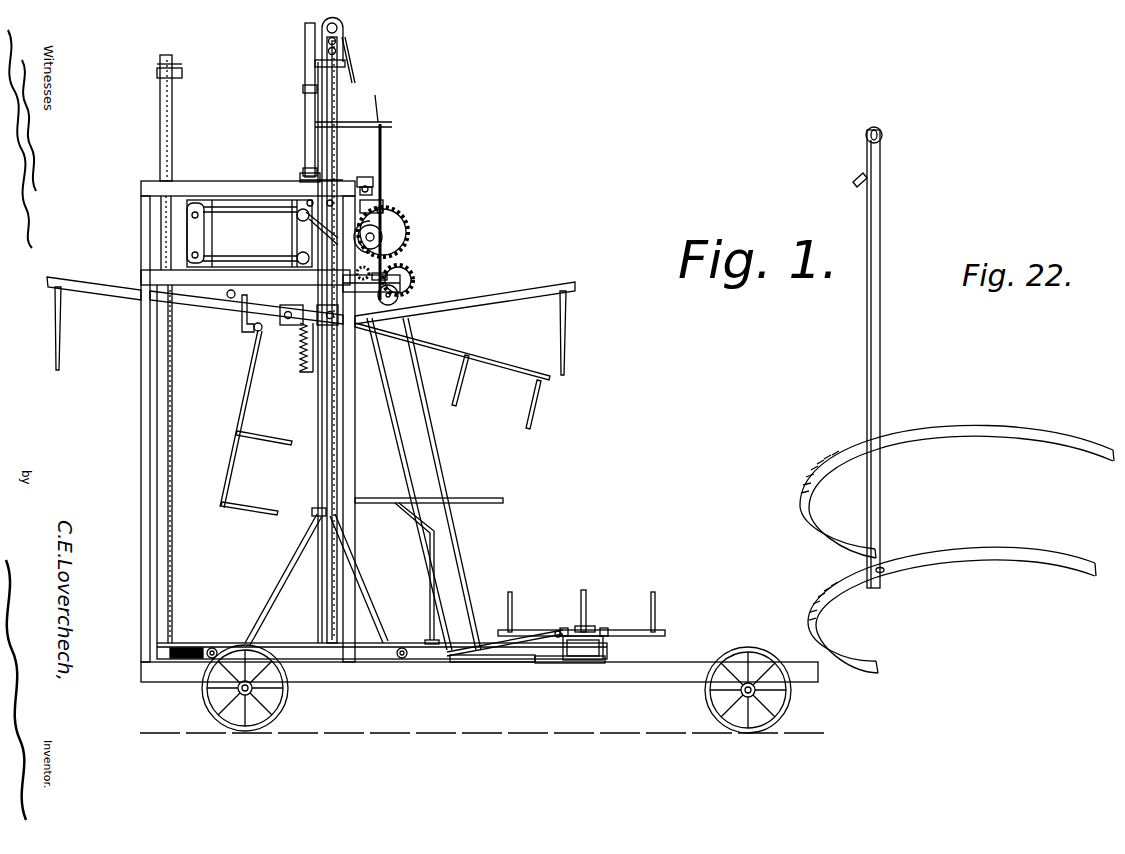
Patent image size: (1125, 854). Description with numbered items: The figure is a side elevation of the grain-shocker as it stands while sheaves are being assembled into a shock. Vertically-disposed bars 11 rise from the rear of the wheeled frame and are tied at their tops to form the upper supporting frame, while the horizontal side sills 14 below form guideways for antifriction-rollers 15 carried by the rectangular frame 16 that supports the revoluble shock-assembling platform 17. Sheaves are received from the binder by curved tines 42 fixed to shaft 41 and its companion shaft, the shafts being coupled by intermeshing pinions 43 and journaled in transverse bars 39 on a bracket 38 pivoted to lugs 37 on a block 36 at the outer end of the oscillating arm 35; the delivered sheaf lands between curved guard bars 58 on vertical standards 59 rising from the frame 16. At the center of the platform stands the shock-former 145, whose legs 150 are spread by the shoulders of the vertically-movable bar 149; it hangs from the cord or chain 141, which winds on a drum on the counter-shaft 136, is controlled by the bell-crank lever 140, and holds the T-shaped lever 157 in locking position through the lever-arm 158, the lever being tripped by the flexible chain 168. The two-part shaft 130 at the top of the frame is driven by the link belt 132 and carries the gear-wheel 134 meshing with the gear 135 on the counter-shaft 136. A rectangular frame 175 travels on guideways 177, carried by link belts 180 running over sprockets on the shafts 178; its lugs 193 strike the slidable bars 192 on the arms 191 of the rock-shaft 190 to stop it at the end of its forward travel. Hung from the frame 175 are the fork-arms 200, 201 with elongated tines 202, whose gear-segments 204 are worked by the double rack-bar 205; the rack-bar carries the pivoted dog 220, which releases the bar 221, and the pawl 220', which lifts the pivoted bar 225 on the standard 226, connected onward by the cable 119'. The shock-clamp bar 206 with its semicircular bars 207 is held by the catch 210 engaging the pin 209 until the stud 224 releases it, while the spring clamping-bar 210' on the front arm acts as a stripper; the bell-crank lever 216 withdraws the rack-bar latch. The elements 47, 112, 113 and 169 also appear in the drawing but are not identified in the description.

In FIG. 1, the vertically-disposed bars 11 is at (141, 474).
In FIG. 1, the horizontal side sills 14 is at (403, 676).
In FIG. 1, the antifriction-rollers 15 is at (208, 647).
In FIG. 1, the rectangular frame 16 is at (288, 650).
In FIG. 1, the shock-assembling platform 17 is at (216, 645).
In FIG. 1, the arm 35 is at (501, 660).
In FIG. 1, the block 36 is at (606, 659).
In FIG. 1, the upwardly-extending lugs 37 is at (606, 648).
In FIG. 1, the bracket 38 is at (590, 626).
In FIG. 1, the transversely-disposed bars 39 is at (566, 628).
In FIG. 1, the shaft 41 is at (632, 631).
In FIG. 1, the curved tines or prongs 42 is at (512, 594).
In FIG. 1, the intermeshing pinions 43 is at (556, 630).
In FIG. 1, the lever 47 is at (482, 640).
In FIG. 1, the curved arms or bars 58 is at (500, 497).
In FIG. 1, the vertical standards 59 is at (436, 558).
In FIG. 1, the head 112 is at (343, 25).
In FIG. 1, the pin 113 is at (343, 40).
In FIG. 1, the cable 119' is at (142, 386).
In FIG. 1, the two-part shaft 130 is at (383, 238).
In FIG. 1, the link belt 132 is at (438, 466).
In FIG. 1, the gear-wheel 134 is at (408, 226).
In FIG. 1, the gear 135 is at (412, 276).
In FIG. 1, the counter-shaft 136 is at (398, 292).
In FIG. 1, the bell-crank lever 140 is at (387, 276).
In FIG. 1, the cord or chain 141 is at (322, 38).
In FIG. 1, the shock support or former 145 is at (318, 458).
In FIG. 1, the vertically-movable bar 149 is at (318, 610).
In FIG. 1, the legs 150 is at (275, 590).
In FIG. 1, the T-shaped lever 157 is at (318, 128).
In FIG. 1, the lever-arms 158 is at (358, 121).
In FIG. 1, the flexible cable or chain 168 is at (383, 205).
In FIG. 1, the pawl 169 is at (372, 192).
In FIG. 1, the rectangular frame 175 is at (305, 98).
In FIG. 1, the guideways 177 is at (258, 208).
In FIG. 1, the shafts 178 is at (204, 218).
In FIG. 1, the link belt 180 is at (160, 243).
In FIG. 1, the rock-shaft 190 is at (373, 186).
In FIG. 1, the arms 191 is at (373, 180).
In FIG. 1, the slidable bars 192 is at (306, 168).
In FIG. 1, the lugs 193 is at (300, 178).
In FIG. 1, the fork-arm 200 is at (106, 292).
In FIG. 1, the fork-arm 201 is at (545, 286).
In FIG. 1, the elongated tines 202 is at (54, 343).
In FIG. 1, the gear-segment 204 is at (292, 330).
In FIG. 1, the double rack-bar 205 is at (302, 370).
In FIG. 1, the shock-clamp bar 206 is at (242, 408).
In FIG. 22, the shock-clamp bar 206 is at (881, 345).
In FIG. 1, the semicircular bars 207 is at (278, 436).
In FIG. 22, the semicircular bars 207 is at (938, 428).
In FIG. 1, the pin 209 is at (252, 338).
In FIG. 22, the pin 209 is at (855, 181).
In FIG. 1, the catch 210 is at (239, 323).
In FIG. 1, the clamping-bar 210' is at (452, 351).
In FIG. 1, the bell-crank lever 216 is at (383, 210).
In FIG. 1, the pivoted dog 220 is at (287, 80).
In FIG. 1, the pawl 220' is at (300, 60).
In FIG. 1, the bar 221 is at (355, 72).
In FIG. 1, the stud 224 is at (229, 298).
In FIG. 1, the pivoted bar 225 is at (178, 68).
In FIG. 1, the standard 226 is at (160, 115).